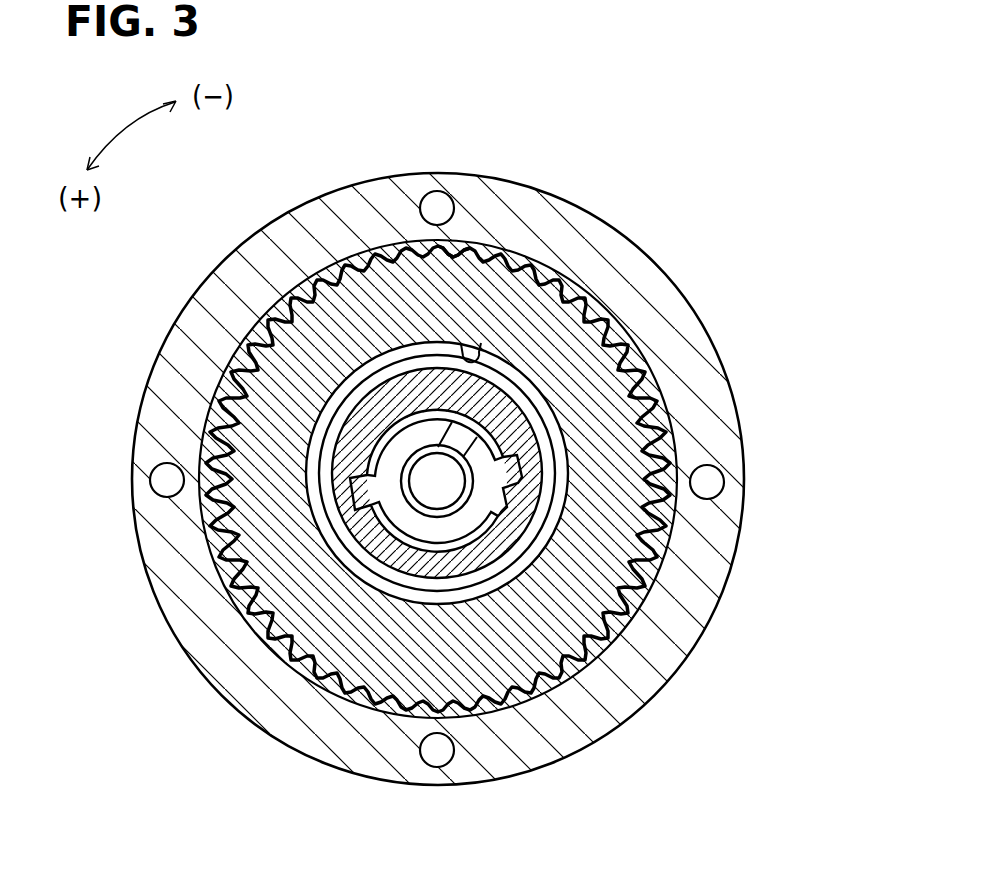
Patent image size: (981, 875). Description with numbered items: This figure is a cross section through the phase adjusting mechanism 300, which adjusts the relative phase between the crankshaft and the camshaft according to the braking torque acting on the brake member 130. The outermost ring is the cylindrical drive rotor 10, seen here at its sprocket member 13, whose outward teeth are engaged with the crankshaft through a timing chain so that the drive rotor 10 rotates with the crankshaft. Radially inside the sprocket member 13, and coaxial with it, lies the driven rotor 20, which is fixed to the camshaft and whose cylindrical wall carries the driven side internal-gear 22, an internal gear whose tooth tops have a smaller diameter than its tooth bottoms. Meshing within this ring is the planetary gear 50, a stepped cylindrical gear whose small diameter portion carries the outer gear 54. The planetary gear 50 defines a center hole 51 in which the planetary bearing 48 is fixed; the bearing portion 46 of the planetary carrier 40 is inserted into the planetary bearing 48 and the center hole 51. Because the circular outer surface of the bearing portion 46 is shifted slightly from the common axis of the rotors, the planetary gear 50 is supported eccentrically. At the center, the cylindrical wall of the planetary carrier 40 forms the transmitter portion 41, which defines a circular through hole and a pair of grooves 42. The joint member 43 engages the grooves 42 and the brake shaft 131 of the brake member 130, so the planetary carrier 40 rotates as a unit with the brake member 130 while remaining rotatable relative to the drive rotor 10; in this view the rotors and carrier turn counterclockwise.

The phase adjusting mechanism 300 is at (693, 257).
The drive rotor 10 is at (197, 315).
The sprocket member 13 is at (197, 315).
The driven side internal-gear 22 is at (282, 302).
The driven rotor 20 is at (350, 545).
The planetary gear 50 is at (300, 300).
The outer gear 54 is at (300, 300).
The center hole 51 is at (470, 352).
The bearing portion 46 is at (347, 413).
The planetary carrier 40 is at (420, 551).
The planetary bearing 48 is at (518, 550).
The brake member 130 is at (420, 453).
The brake shaft 131 is at (420, 453).
The transmitter portion 41 is at (480, 516).
The grooves 42 is at (520, 475).
The joint member 43 is at (443, 532).